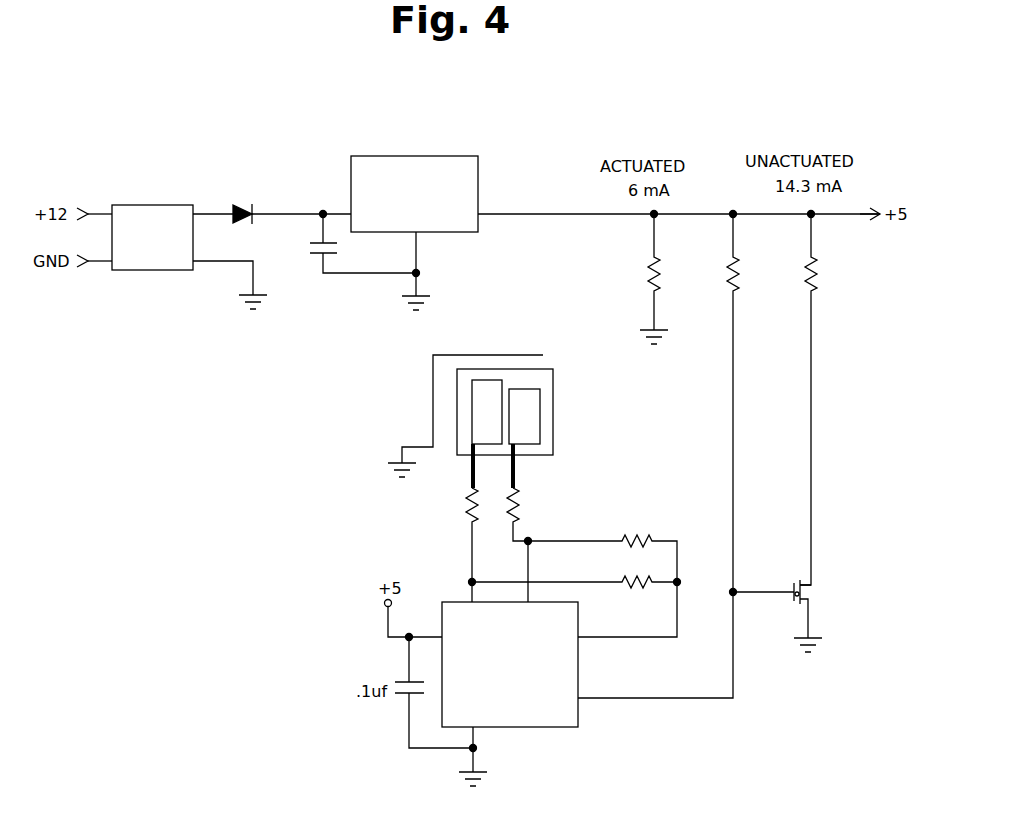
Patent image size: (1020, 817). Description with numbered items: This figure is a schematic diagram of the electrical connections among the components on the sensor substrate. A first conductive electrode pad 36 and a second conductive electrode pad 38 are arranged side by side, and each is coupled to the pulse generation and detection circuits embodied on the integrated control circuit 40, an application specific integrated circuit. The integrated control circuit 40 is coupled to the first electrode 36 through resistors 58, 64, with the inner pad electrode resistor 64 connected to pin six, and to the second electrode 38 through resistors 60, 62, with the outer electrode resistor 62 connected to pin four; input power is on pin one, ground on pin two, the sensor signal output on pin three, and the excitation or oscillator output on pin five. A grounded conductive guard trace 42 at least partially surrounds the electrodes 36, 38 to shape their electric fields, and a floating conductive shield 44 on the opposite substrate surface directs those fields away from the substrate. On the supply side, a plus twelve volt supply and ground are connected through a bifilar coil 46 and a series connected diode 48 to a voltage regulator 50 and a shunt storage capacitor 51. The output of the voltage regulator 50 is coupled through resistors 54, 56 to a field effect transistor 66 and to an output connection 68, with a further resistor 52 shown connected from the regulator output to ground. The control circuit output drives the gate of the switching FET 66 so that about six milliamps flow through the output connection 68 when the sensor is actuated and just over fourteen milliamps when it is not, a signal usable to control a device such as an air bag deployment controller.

The first conductive electrode pad 36 is at (497, 382).
The second conductive electrode pad 38 is at (525, 413).
The integrated control circuit 40 is at (541, 718).
The guard trace 42 is at (430, 392).
The floating conductive shield 44 is at (548, 451).
The bifilar coil 46 is at (162, 163).
The diode 48 is at (272, 160).
The voltage regulator 50 is at (493, 149).
The shunt storage capacitor 51 is at (352, 250).
The resistor 838 ohm 1% 52 is at (645, 267).
The resistor 54 is at (727, 284).
The resistor 56 is at (803, 284).
The resistor 58 is at (463, 521).
The resistor 60 is at (510, 516).
The outer electrode resistor 62 is at (645, 534).
The inner pad electrode resistor 64 is at (620, 579).
The field effect transistor 66 is at (826, 581).
The output connection 68 is at (893, 191).